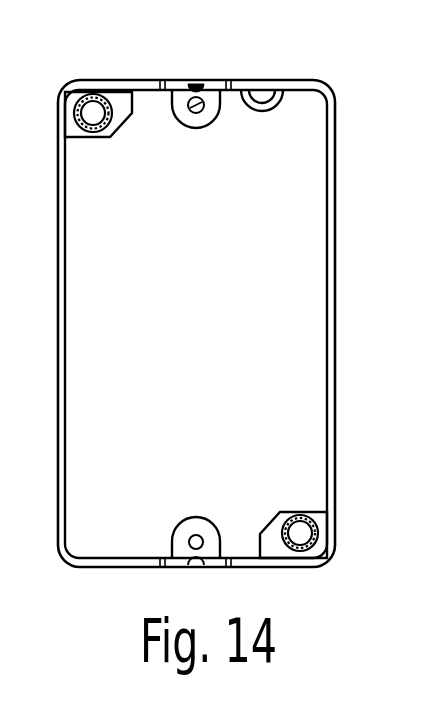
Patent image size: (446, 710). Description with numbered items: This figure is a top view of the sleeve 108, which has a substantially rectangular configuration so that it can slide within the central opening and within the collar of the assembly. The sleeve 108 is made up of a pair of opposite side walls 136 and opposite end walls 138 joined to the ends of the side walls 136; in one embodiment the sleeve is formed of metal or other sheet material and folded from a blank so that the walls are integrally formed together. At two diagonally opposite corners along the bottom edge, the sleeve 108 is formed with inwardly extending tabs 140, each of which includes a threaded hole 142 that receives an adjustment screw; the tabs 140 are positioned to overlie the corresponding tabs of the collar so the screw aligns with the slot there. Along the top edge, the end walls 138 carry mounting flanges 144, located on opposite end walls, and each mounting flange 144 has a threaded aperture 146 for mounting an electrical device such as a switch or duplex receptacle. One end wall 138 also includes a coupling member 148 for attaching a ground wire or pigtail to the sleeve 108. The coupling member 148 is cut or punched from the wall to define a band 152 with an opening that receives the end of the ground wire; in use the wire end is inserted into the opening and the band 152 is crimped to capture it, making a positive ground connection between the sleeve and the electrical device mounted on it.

The sleeve 108 is at (348, 135).
The side walls 136 is at (57, 283).
The end walls 138 is at (243, 86).
The tabs 140 is at (132, 112).
The threaded hole 142 is at (93, 112).
The mounting flanges 144 is at (205, 128).
The threaded aperture 146 is at (196, 105).
The coupling member 148 is at (265, 116).
The band 152 is at (283, 101).